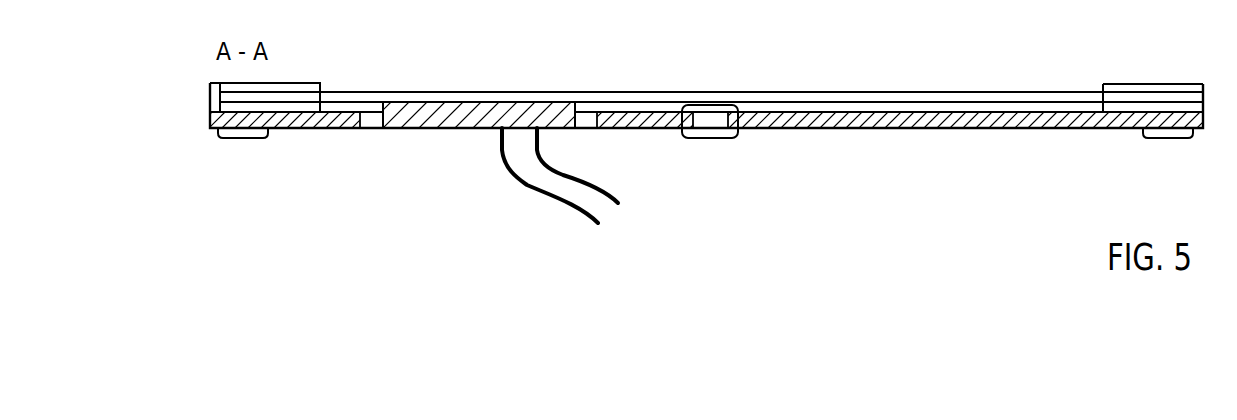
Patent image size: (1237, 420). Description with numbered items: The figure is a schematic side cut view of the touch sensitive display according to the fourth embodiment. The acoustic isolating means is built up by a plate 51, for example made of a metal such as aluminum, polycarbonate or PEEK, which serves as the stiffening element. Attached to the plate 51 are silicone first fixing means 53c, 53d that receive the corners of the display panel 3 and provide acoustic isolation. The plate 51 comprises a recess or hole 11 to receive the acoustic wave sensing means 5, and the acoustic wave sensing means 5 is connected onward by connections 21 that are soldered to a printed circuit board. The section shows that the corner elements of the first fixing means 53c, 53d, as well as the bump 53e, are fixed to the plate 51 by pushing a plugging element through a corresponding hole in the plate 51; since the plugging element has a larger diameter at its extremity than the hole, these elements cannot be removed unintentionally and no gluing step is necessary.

The display panel 3 is at (667, 92).
The acoustic wave sensing means 5 is at (418, 118).
The recess or hole 11 is at (372, 129).
The connections 21 is at (518, 178).
The plate 51 is at (822, 129).
The first fixing means 53c is at (1168, 139).
The first fixing means 53d is at (248, 139).
The bump 53e is at (707, 139).